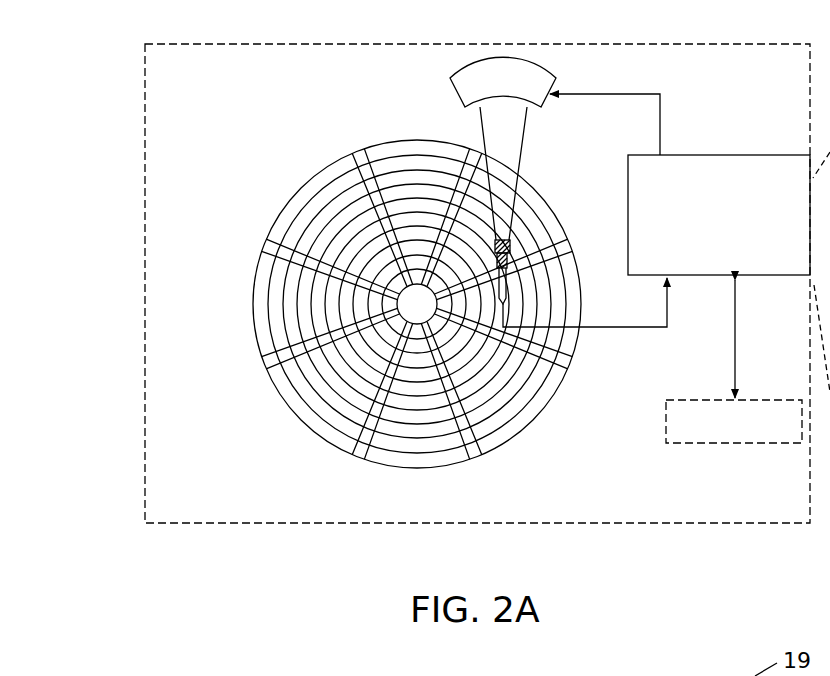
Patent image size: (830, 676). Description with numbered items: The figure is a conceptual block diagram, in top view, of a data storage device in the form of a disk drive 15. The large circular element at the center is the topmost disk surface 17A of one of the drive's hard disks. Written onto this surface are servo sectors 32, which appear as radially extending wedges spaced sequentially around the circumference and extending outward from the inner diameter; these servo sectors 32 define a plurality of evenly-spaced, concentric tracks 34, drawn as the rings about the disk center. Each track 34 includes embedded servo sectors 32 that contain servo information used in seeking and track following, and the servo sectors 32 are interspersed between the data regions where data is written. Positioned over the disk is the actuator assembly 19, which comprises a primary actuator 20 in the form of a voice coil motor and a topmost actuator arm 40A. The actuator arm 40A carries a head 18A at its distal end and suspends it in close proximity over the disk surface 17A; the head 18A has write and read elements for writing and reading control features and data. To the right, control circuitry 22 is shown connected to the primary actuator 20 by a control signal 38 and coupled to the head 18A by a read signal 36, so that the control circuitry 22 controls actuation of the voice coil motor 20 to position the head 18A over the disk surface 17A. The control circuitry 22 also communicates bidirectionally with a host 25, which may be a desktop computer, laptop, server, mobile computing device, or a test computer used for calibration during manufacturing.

The disk drive 15 is at (637, 538).
The topmost disk surface 17A is at (384, 275).
The head 18A is at (510, 300).
The actuator assembly 19 is at (524, 129).
The primary actuator (voice coil motor) 20 is at (556, 106).
The control circuitry 22 is at (705, 257).
The host 25 is at (781, 438).
The servo sectors 32 is at (412, 289).
The concentric tracks 34 is at (392, 152).
The read signal 36 is at (646, 328).
The control signal 38 is at (660, 100).
The topmost actuator arm 40A is at (518, 166).